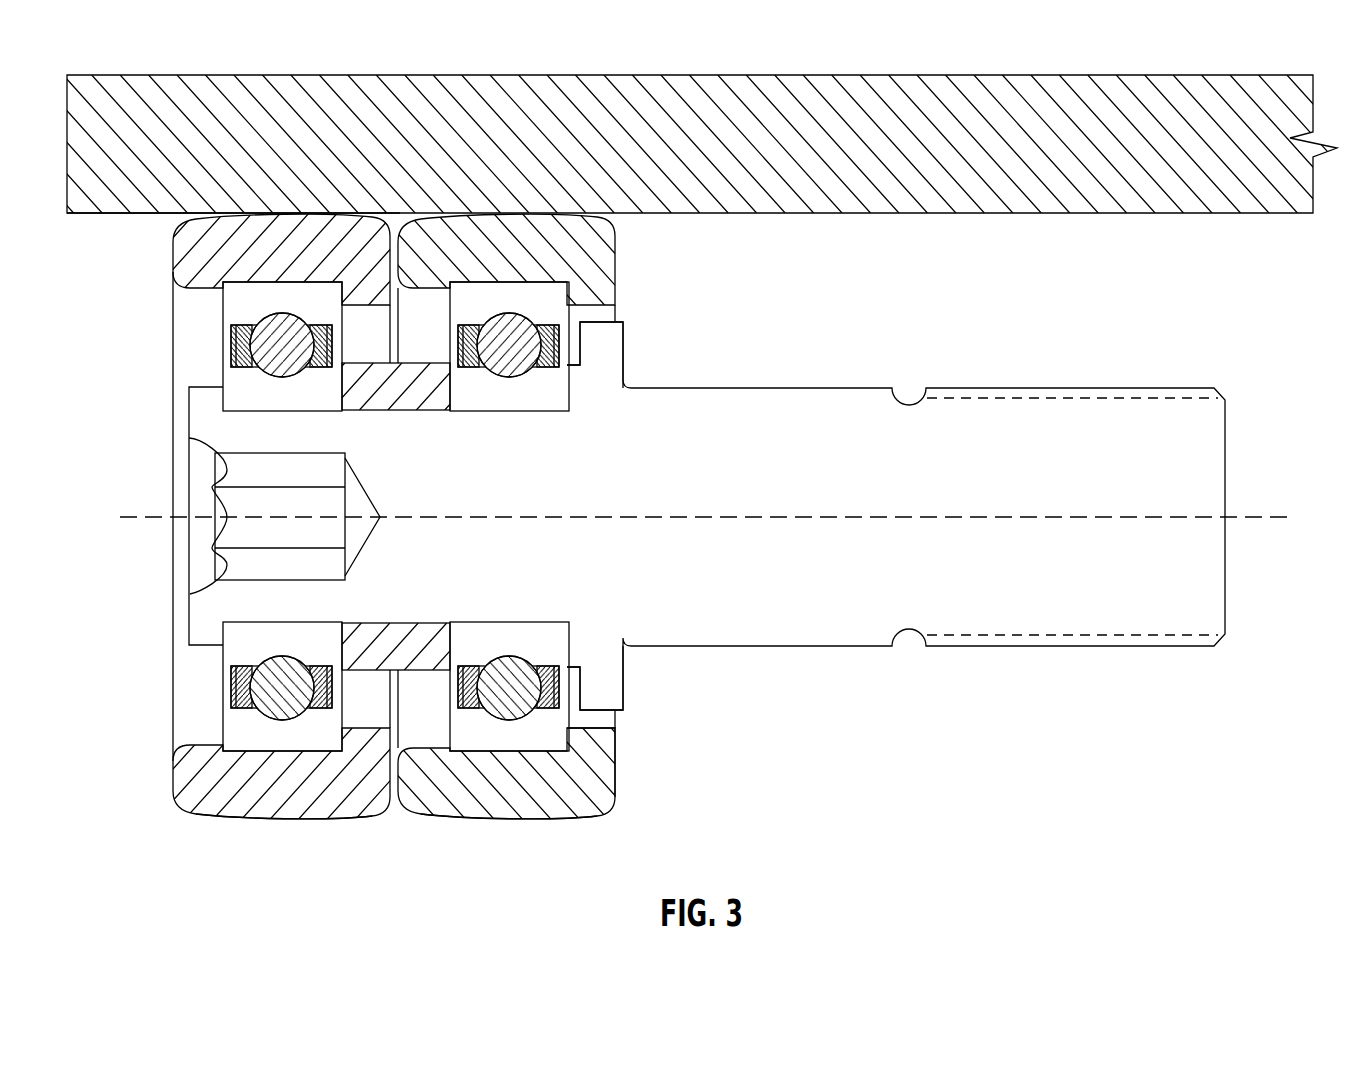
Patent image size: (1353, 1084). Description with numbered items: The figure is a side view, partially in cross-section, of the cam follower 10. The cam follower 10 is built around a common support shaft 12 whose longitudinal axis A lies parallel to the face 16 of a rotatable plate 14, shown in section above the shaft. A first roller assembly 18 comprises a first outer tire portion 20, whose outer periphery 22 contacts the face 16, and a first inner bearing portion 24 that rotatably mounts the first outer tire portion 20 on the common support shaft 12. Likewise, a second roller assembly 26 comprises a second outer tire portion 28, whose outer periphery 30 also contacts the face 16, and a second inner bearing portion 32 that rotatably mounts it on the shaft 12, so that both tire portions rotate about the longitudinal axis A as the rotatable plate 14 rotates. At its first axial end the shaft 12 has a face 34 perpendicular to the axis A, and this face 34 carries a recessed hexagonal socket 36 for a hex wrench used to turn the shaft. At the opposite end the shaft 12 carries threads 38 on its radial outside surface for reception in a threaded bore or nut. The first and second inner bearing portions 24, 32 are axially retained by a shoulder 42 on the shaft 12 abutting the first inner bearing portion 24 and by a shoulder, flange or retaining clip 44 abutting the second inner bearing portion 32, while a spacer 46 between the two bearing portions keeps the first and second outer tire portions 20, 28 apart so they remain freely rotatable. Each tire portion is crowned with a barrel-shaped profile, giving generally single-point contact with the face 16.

The cam follower 10 is at (817, 368).
The common support shaft 12 is at (813, 620).
The rotatable plate 14 is at (117, 213).
The face 16 is at (975, 213).
The first roller assembly 18 is at (615, 318).
The first outer tire portion 20 is at (540, 797).
The outer periphery 22 is at (453, 818).
The first inner bearing portion 24 is at (555, 738).
The second roller assembly 26 is at (188, 349).
The second outer tire portion 28 is at (287, 800).
The outer periphery 30 is at (222, 820).
The second inner bearing portion 32 is at (245, 742).
The face 34 is at (189, 438).
The recessed hexagonal socket 36 is at (335, 580).
The threads 38 is at (1137, 398).
The shoulder 42 is at (613, 355).
The retaining clip 44 is at (213, 650).
The spacer 46 is at (423, 408).
The longitudinal axis A is at (1270, 505).